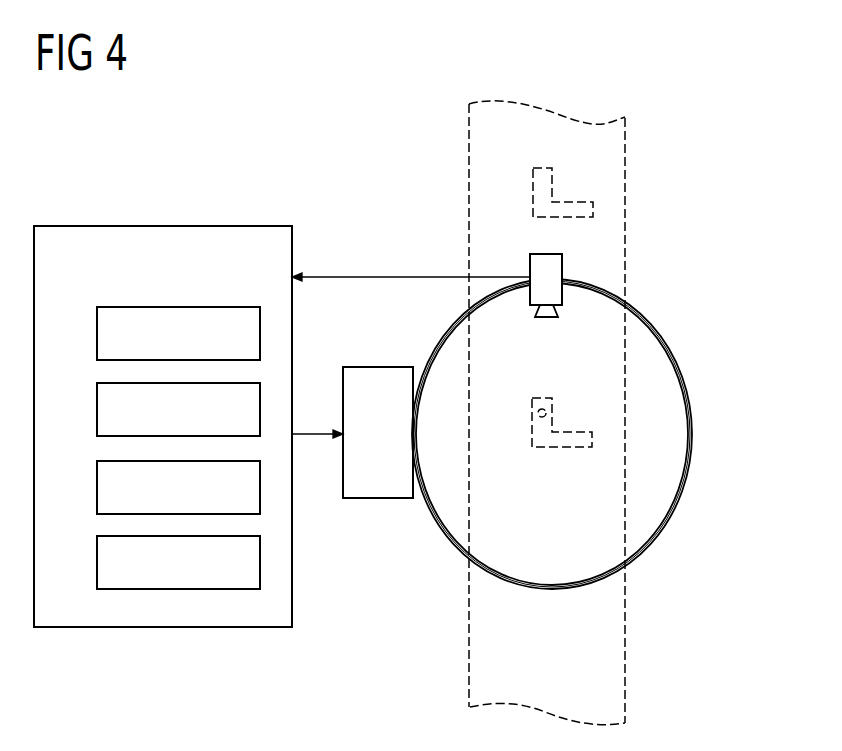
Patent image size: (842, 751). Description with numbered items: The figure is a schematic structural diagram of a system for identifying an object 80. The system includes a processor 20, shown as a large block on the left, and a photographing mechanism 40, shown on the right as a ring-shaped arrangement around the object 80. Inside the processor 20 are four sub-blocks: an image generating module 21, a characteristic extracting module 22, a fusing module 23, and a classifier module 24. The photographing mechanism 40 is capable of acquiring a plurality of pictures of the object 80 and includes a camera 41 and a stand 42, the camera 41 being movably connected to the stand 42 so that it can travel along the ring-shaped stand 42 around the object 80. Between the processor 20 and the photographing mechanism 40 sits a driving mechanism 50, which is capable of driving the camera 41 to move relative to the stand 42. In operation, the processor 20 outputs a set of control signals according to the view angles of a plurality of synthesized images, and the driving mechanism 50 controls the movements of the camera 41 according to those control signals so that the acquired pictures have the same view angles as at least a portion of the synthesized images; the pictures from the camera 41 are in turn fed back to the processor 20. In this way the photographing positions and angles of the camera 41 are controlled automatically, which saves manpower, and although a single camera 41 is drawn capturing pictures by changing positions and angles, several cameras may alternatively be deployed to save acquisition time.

The processor 20 is at (87, 284).
The image generating module 21 is at (187, 351).
The characteristic extracting module 22 is at (187, 427).
The fusing module 23 is at (187, 504).
The classifier module 24 is at (187, 581).
The driving mechanism 50 is at (392, 449).
The photographing mechanism 40 is at (641, 303).
The camera 41 is at (540, 270).
The stand 42 is at (674, 356).
The object 80 is at (557, 448).